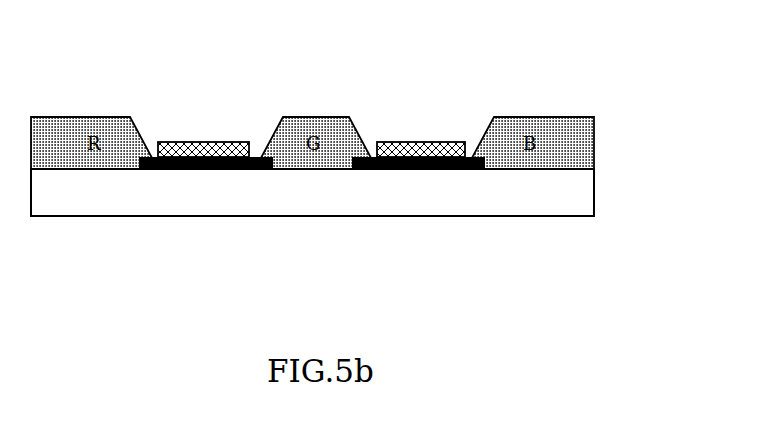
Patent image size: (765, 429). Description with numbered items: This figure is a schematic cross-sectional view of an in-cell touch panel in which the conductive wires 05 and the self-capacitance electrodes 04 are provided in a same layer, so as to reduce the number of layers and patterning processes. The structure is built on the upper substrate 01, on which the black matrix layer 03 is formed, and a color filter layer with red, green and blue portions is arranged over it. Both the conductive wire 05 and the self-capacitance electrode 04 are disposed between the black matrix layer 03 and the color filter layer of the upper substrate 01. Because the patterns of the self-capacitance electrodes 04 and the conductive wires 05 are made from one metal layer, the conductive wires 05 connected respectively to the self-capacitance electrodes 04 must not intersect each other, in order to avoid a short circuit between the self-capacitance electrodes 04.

The upper substrate 01 is at (358, 203).
The black matrix layer 03 is at (215, 168).
The self-capacitance electrode 04 is at (219, 142).
The conductive wire 05 is at (435, 142).